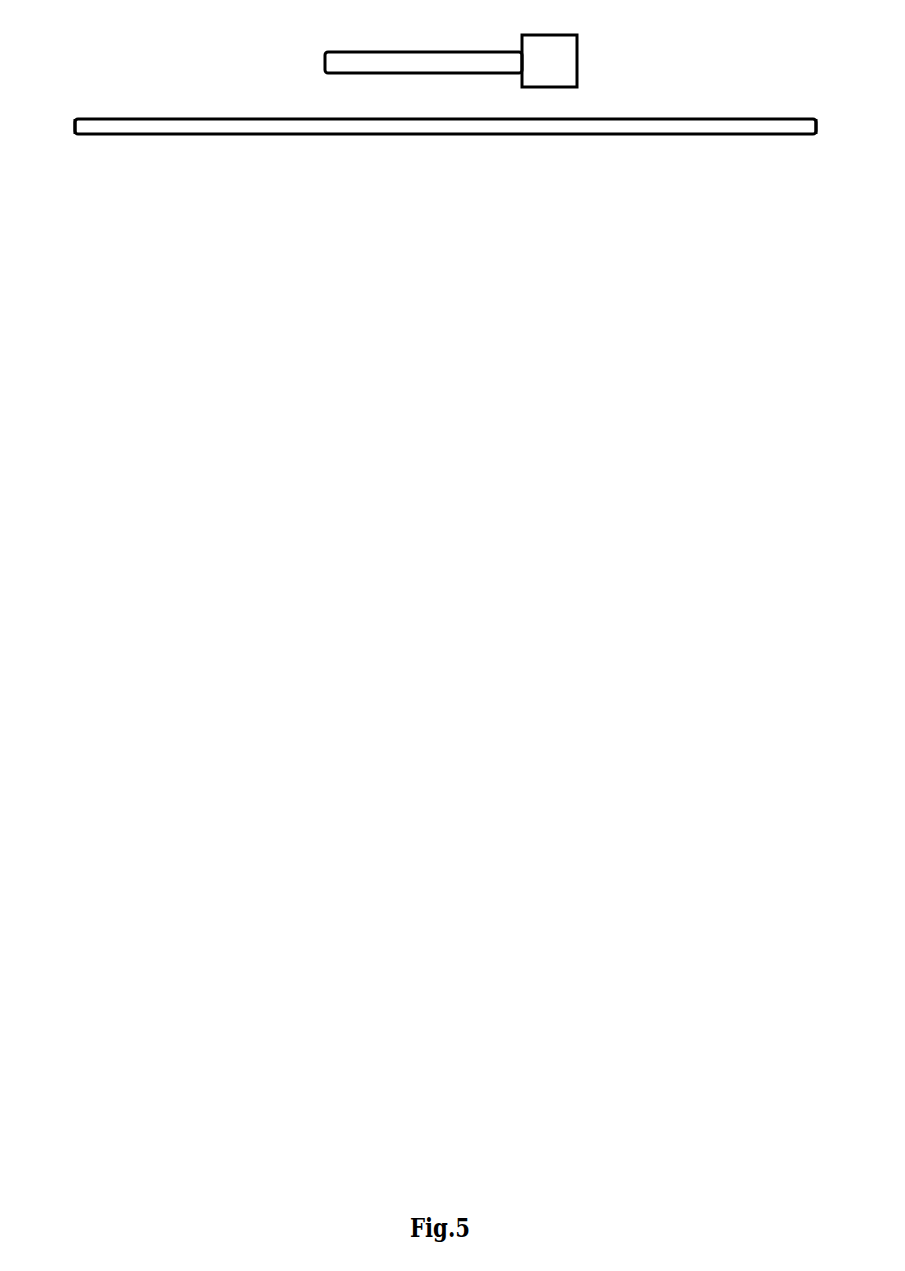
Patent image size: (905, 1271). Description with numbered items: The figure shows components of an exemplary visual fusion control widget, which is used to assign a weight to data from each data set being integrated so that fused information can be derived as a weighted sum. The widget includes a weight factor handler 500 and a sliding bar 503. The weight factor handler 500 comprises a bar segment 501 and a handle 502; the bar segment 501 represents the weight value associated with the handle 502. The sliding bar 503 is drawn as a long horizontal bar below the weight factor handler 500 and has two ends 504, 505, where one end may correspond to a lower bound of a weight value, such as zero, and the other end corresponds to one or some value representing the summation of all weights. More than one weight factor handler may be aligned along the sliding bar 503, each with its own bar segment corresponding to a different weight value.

The weight factor handler 500 is at (468, 43).
The bar segment 501 is at (403, 60).
The handle 502 is at (555, 55).
The sliding bar 503 is at (672, 125).
The end of sliding bar 504 is at (820, 138).
The end of sliding bar 505 is at (67, 135).